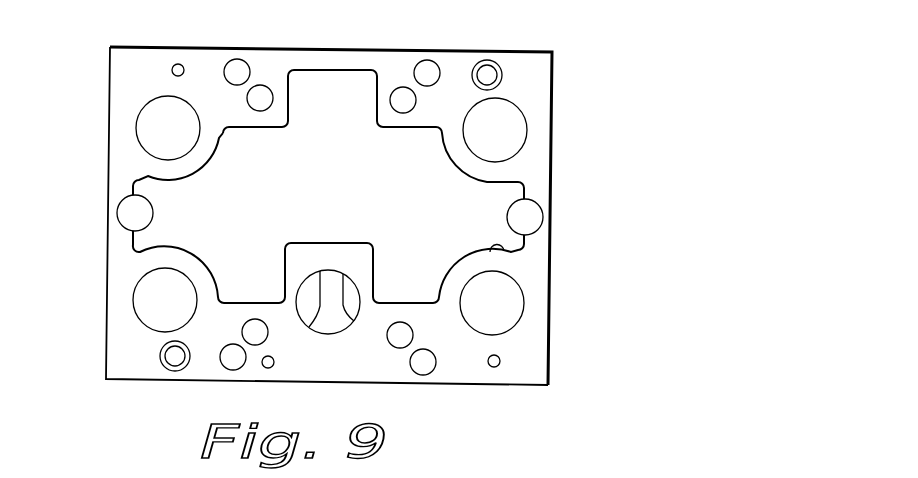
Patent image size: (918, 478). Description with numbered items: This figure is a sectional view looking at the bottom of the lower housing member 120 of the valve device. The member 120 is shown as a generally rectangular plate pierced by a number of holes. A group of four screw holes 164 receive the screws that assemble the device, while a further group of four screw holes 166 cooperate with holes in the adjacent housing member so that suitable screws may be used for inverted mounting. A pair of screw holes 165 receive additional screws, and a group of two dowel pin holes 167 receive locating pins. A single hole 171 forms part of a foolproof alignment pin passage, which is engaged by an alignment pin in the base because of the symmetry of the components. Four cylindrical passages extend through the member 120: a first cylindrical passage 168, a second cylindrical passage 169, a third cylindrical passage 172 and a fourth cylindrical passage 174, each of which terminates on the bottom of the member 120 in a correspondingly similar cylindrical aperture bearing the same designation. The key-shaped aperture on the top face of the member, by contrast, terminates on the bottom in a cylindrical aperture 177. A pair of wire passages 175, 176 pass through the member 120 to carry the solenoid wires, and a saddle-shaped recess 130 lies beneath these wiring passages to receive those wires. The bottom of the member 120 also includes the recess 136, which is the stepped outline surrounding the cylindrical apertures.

The lower housing member 120 is at (549, 240).
The recess 130 is at (551, 297).
The recess 136 is at (348, 80).
The screw holes 164 is at (267, 88).
The screw holes 165 is at (181, 65).
The screw holes 166 is at (243, 62).
The dowel pin holes 167 is at (493, 367).
The cylindrical passage 168 is at (516, 322).
The second cylindrical passage 169 is at (525, 134).
The hole 171 is at (270, 368).
The third cylindrical passage 172 is at (138, 131).
The fourth cylindrical passage 174 is at (141, 320).
The wire passage 175 is at (507, 216).
The wire passage 176 is at (153, 212).
The cylindrical aperture 177 is at (355, 283).